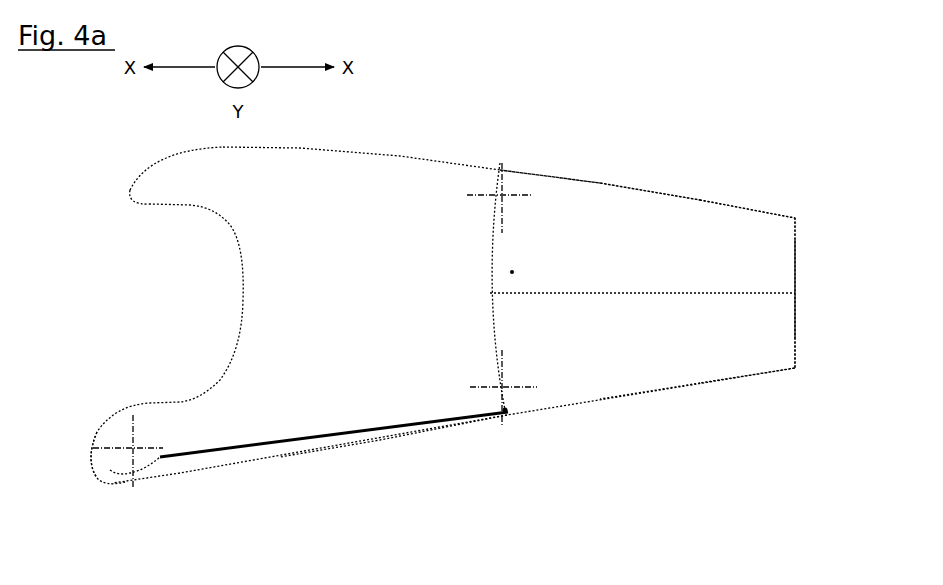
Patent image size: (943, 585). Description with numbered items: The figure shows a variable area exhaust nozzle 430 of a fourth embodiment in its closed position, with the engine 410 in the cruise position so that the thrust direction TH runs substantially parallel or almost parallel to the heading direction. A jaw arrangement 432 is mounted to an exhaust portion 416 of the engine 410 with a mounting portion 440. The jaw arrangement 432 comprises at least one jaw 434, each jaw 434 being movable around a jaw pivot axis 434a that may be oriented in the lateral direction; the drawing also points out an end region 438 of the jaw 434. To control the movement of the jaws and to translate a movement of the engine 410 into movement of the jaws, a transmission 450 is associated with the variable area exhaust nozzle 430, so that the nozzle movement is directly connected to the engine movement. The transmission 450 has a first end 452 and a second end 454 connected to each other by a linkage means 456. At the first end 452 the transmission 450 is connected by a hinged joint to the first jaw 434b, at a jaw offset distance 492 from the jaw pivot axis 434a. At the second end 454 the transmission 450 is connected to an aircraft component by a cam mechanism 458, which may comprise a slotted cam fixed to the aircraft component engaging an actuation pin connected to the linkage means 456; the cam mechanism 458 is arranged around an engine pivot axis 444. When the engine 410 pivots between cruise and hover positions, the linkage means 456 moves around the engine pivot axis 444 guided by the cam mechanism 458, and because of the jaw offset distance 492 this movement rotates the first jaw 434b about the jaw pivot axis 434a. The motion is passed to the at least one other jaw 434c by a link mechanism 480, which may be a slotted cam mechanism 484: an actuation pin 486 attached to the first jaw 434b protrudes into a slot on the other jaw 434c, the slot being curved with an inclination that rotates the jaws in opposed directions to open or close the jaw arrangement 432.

The engine 410 is at (163, 282).
The exhaust portion 416 is at (490, 215).
The variable area exhaust nozzle 430 is at (693, 173).
The jaw arrangement 432 is at (637, 173).
The jaw 434 is at (733, 222).
The jaw pivot axis 434a is at (497, 187).
The first jaw 434b is at (665, 352).
The other jaw 434c is at (568, 177).
The blade end face 438 is at (803, 290).
The mounting portion 440 is at (488, 432).
The engine pivot axis 444 is at (125, 442).
The transmission 450 is at (343, 433).
The first end 452 is at (497, 405).
The second end 454 is at (123, 465).
The linkage means 456 is at (425, 433).
The cam mechanism 458 is at (147, 453).
The link mechanism 480 is at (518, 273).
The slotted cam mechanism 484 is at (515, 280).
The actuation pin 486 is at (510, 268).
The jaw offset distance 492 is at (530, 353).
The thrust direction TH is at (752, 450).